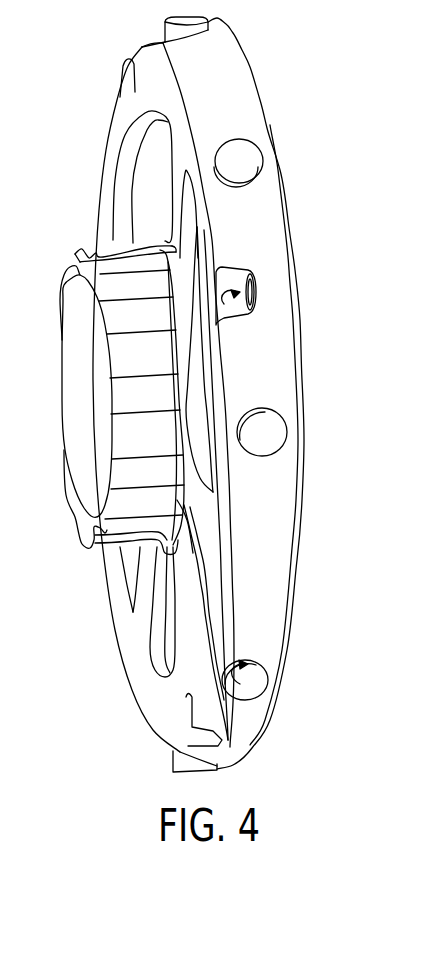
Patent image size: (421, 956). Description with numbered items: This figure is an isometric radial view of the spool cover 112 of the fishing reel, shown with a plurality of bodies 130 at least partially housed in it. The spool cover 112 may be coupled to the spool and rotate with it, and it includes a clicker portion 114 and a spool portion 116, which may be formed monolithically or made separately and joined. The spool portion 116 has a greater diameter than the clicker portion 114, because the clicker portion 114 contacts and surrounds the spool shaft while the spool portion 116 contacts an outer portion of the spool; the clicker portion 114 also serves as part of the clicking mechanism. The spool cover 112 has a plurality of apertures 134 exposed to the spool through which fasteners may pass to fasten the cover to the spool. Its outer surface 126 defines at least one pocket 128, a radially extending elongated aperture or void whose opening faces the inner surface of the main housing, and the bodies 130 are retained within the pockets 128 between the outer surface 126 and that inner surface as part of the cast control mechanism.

The spool cover 112 is at (301, 302).
The clicker portion 114 is at (80, 273).
The spool portion 116 is at (283, 365).
The outer surface 126 is at (280, 533).
The pocket 128 is at (284, 678).
The bodies 130 is at (252, 672).
The apertures 134 is at (253, 308).